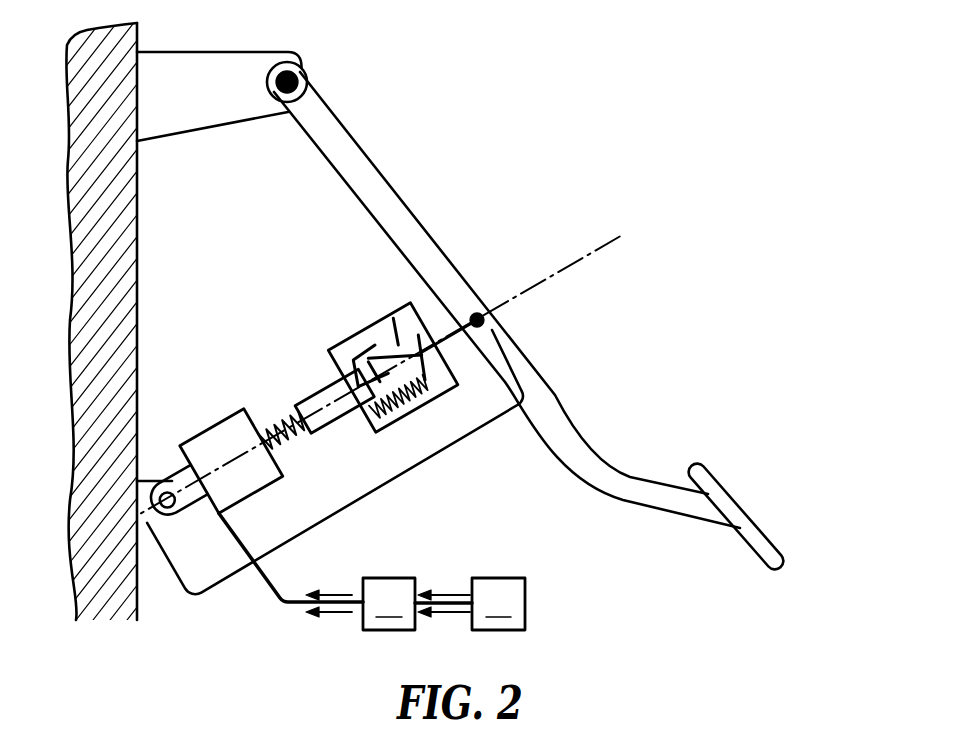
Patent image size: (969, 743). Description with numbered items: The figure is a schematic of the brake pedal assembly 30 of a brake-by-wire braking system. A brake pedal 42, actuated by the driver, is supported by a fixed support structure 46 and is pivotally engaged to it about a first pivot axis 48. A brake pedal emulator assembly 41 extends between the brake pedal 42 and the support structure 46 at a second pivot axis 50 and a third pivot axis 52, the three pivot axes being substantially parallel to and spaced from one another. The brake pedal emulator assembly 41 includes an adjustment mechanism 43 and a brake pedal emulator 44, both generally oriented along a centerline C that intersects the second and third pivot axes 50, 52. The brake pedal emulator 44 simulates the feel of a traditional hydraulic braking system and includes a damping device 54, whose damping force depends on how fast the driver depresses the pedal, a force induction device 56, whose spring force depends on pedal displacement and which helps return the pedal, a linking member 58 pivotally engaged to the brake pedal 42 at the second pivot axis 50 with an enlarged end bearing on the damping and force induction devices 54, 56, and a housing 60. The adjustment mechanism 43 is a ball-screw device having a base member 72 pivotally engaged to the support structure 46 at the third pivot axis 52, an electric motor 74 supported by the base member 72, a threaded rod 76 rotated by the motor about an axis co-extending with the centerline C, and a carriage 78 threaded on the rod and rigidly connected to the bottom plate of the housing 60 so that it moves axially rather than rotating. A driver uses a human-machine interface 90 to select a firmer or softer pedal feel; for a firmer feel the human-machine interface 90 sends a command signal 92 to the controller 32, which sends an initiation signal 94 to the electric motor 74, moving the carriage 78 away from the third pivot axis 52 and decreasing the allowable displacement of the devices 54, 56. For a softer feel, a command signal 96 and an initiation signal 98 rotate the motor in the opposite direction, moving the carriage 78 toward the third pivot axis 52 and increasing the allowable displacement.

The brake pedal assembly 30 is at (571, 131).
The controller 32 is at (417, 604).
The brake pedal emulator assembly 41 is at (364, 494).
The brake pedal 42 is at (570, 408).
The adjustment mechanism 43 is at (262, 460).
The brake pedal emulator 44 is at (397, 354).
The support structure 46 is at (185, 131).
The first pivot axis 48 is at (300, 70).
The second pivot axis 50 is at (484, 312).
The third pivot axis 52 is at (172, 512).
The damping device 54 is at (358, 355).
The force induction device 56 is at (408, 410).
The linking member 58 is at (453, 340).
The housing 60 is at (390, 300).
The base member 72 is at (176, 462).
The electric motor 74 is at (258, 506).
The threaded rod 76 is at (290, 442).
The carriage 78 is at (335, 425).
The human-machine interface 90 is at (498, 604).
The command signal 92 is at (442, 594).
The initiation signal 94 is at (330, 594).
The command signal 96 is at (442, 613).
The initiation signal 98 is at (332, 613).
The centerline C is at (576, 263).